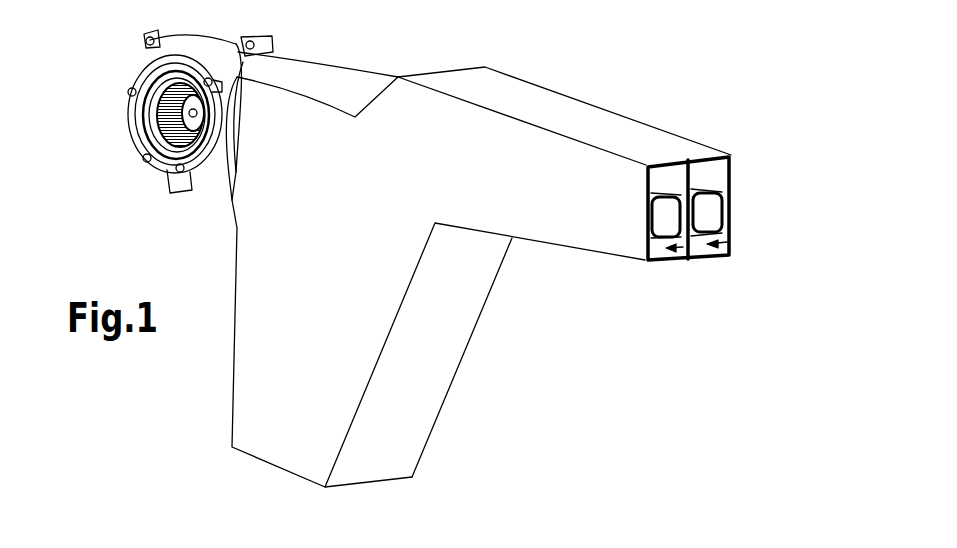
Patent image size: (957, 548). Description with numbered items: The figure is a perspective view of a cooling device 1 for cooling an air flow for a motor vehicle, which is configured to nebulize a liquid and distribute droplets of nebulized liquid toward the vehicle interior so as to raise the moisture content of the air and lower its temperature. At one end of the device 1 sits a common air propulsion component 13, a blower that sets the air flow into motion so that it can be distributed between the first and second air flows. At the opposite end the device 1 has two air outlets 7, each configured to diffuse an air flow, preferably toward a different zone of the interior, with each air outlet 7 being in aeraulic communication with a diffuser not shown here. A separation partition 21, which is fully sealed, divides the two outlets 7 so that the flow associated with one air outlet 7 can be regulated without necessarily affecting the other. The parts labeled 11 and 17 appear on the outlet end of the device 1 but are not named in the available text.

The cooling device 1 is at (557, 73).
The common air propulsion component 13 is at (108, 125).
The separation partition 21 is at (679, 178).
The duct channel 17 is at (717, 175).
The inner pipe opening 11 is at (663, 218).
The air outlet 7 is at (730, 242).